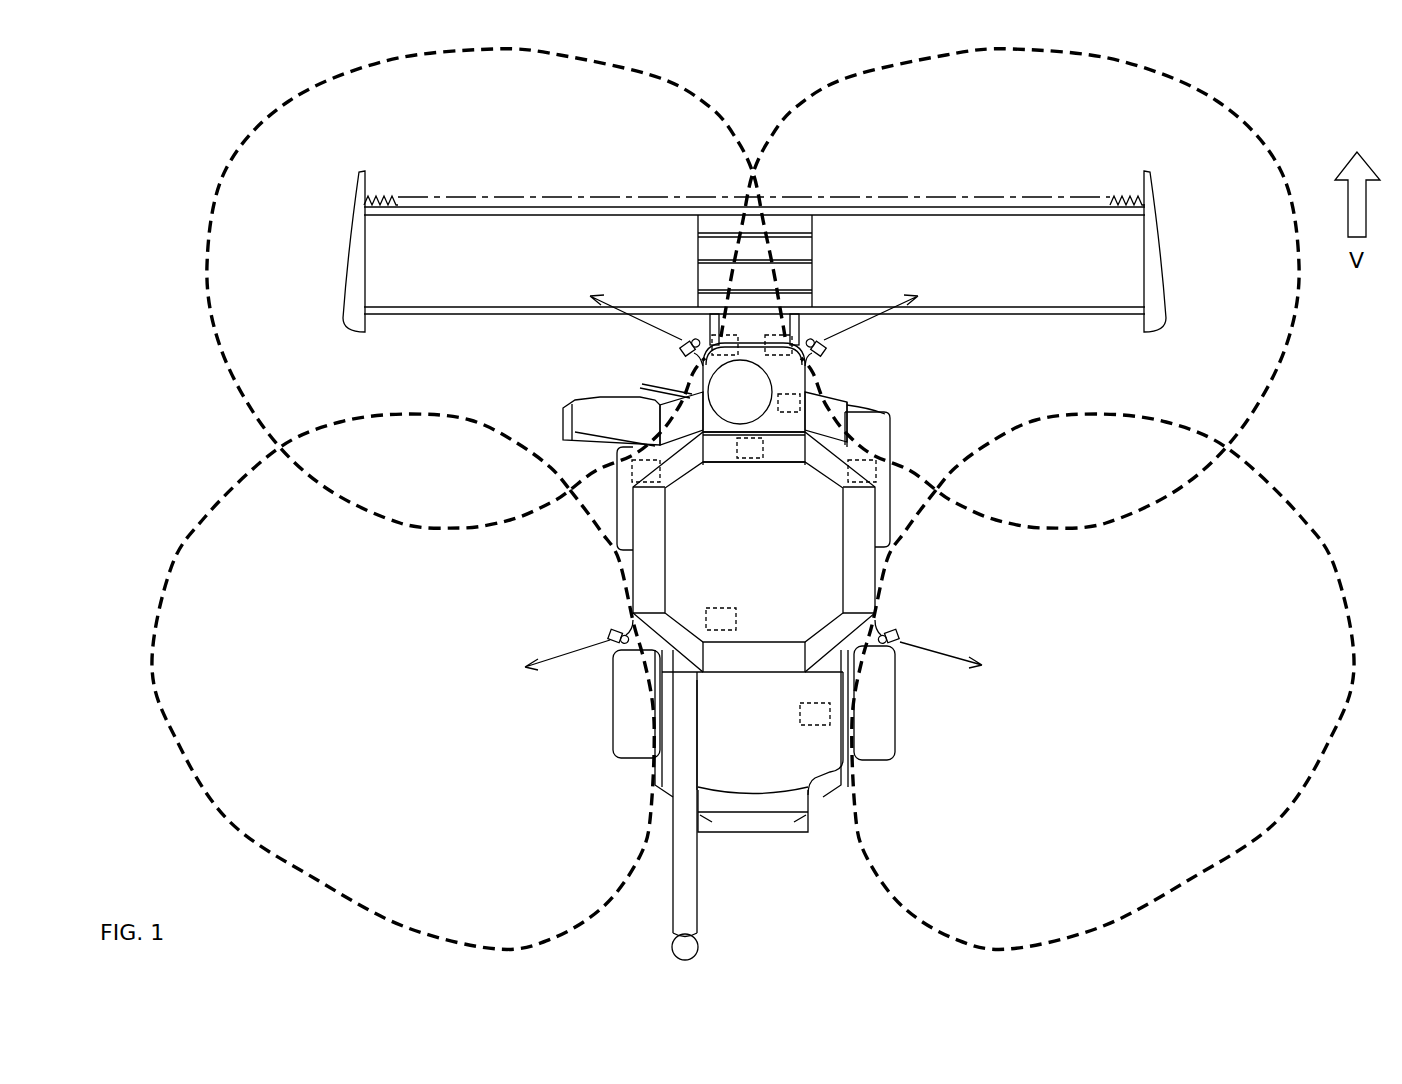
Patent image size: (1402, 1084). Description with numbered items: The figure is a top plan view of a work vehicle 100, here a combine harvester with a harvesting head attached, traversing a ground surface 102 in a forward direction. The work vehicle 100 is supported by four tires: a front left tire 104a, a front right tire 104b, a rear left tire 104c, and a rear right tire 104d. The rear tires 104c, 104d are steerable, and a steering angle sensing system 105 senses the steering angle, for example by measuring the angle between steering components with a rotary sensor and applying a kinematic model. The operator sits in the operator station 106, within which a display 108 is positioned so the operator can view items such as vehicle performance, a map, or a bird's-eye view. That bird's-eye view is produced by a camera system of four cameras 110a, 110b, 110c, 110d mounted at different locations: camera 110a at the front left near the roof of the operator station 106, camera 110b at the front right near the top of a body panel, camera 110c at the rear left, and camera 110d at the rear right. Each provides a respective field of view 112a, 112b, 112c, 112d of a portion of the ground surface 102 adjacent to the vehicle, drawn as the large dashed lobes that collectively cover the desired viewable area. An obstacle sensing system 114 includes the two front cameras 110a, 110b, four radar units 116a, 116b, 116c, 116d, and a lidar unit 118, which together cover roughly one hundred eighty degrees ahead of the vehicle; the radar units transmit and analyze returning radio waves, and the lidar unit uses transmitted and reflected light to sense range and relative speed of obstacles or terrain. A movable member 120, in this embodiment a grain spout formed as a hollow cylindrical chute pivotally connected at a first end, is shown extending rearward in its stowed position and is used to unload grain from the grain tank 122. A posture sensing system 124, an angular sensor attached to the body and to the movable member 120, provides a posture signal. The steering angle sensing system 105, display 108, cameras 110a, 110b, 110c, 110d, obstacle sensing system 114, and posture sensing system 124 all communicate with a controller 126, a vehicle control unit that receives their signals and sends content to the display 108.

The work vehicle 100 is at (216, 80).
The ground surface 102 is at (754, 501).
The front left tire 104a is at (625, 500).
The front right tire 104b is at (885, 500).
The rear left tire 104c is at (627, 722).
The rear right tire 104d is at (880, 722).
The steering angle sensing system 105 is at (800, 710).
The operator station 106 is at (780, 423).
The display 108 is at (805, 397).
The camera 110a is at (680, 350).
The camera 110b is at (830, 350).
The camera 110c is at (610, 630).
The camera 110d is at (895, 633).
The field of view 112a is at (528, 56).
The field of view 112b is at (978, 54).
The field of view 112c is at (183, 570).
The field of view 112d is at (1305, 520).
The obstacle sensing system 114 is at (818, 318).
The radar unit 116a is at (700, 333).
The radar unit 116b is at (786, 290).
The radar unit 116c is at (650, 483).
The radar unit 116d is at (856, 483).
The lidar unit 118 is at (758, 407).
The movable member 120 is at (697, 938).
The grain tank 122 is at (770, 592).
The posture sensing system 124 is at (740, 622).
The controller 126 is at (755, 460).